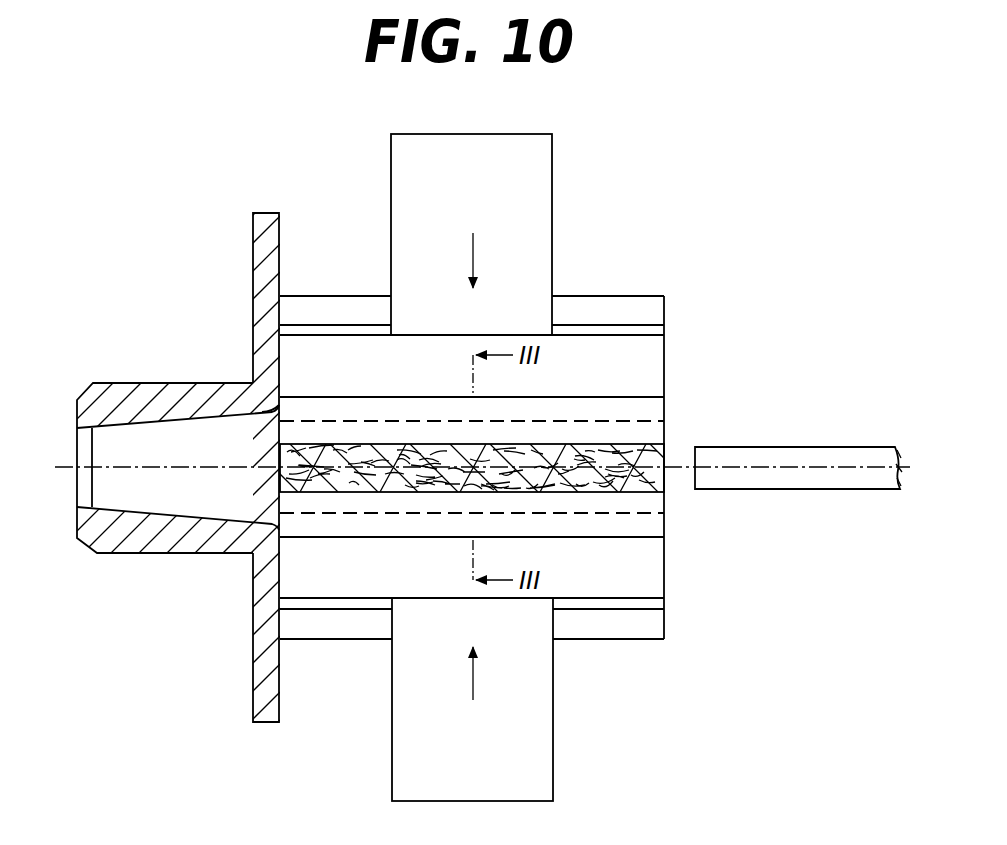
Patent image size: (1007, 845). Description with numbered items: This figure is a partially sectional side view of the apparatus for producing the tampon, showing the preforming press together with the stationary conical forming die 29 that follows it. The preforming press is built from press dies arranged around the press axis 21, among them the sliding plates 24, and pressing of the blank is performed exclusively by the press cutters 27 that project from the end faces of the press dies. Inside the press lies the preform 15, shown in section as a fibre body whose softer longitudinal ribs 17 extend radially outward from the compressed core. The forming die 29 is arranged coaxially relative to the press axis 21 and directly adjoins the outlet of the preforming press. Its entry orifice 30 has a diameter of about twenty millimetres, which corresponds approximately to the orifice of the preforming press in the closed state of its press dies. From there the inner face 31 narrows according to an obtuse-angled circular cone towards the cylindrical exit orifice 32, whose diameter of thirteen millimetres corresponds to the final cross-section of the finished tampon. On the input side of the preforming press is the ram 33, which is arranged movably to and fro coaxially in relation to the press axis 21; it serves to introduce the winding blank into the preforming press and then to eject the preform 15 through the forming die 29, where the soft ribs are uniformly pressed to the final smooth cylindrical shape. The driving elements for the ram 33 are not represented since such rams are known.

The preform 15 is at (669, 452).
The longitudinal ribs 17 is at (343, 437).
The press axis 21 is at (63, 463).
The sliding plates 24 is at (652, 360).
The press cutters 27 is at (654, 410).
The forming die 29 is at (155, 554).
The entry orifice 30 is at (264, 436).
The inner face 31 is at (137, 426).
The exit orifice 32 is at (87, 443).
The ram 33 is at (830, 447).